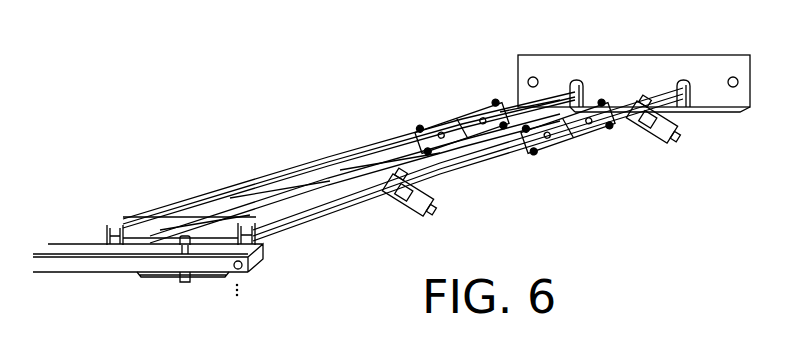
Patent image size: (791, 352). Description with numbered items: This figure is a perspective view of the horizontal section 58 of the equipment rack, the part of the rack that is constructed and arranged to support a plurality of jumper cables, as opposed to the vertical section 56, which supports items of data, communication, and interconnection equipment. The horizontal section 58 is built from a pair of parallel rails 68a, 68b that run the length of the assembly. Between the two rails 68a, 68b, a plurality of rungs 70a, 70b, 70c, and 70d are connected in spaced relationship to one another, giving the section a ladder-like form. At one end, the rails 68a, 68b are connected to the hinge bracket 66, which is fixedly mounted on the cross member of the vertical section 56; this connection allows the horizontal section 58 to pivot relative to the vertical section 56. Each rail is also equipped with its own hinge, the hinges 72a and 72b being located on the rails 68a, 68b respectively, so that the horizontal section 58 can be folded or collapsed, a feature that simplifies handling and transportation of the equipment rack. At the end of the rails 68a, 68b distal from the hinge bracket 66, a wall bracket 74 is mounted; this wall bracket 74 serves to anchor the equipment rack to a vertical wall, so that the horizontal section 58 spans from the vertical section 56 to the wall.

The vertical section 56 is at (263, 297).
The horizontal section 58 is at (326, 152).
The hinge bracket 66 is at (208, 253).
The rail 68a is at (283, 180).
The rail 68b is at (465, 164).
The rung 70a is at (167, 215).
The rung 70b is at (250, 188).
The rung 70c is at (350, 158).
The rung 70d is at (517, 110).
The hinge 72a is at (436, 127).
The hinge 72b is at (552, 145).
The wall bracket 74 is at (610, 63).